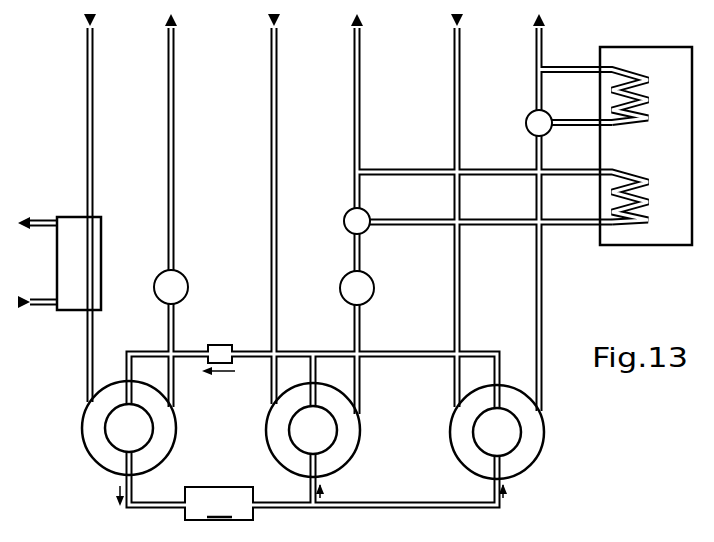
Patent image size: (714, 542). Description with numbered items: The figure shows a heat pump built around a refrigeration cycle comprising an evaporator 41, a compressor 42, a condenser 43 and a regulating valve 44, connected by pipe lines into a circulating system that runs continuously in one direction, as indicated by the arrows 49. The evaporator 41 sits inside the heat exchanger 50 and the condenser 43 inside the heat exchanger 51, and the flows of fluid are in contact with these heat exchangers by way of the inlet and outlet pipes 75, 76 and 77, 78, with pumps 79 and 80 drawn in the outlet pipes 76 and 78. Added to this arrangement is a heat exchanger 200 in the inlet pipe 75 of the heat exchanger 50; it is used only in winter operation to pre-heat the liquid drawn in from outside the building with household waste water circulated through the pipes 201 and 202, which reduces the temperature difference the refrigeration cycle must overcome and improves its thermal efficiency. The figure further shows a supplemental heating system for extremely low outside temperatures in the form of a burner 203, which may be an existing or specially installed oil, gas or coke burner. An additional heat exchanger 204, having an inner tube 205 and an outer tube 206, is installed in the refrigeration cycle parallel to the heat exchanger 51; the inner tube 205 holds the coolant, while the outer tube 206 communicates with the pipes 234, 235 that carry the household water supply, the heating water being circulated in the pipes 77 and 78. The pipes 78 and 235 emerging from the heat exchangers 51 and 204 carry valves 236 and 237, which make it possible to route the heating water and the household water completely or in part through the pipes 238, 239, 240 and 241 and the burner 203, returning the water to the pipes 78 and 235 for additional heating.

The inlet pipe 75 is at (87, 130).
The outlet pipe 76 is at (175, 155).
The inlet pipe 77 is at (271, 172).
The outlet pipe 78 is at (354, 134).
The pump 79 is at (188, 286).
The pump 80 is at (340, 290).
The evaporator 41 is at (106, 442).
The compressor 42 is at (313, 486).
The condenser 43 is at (337, 440).
The regulating valve 44 is at (218, 345).
The arrows 49 is at (118, 484).
The heat exchanger 50 is at (78, 428).
The heat exchanger 51 is at (363, 432).
The heat exchanger 200 is at (102, 240).
The pipe 201 is at (45, 305).
The pipe 202 is at (45, 222).
The burner 203 is at (653, 246).
The additional heat exchanger 204 is at (528, 480).
The inner tube 205 is at (520, 437).
The outer tube 206 is at (542, 430).
The pipe 234 is at (454, 133).
The pipe 235 is at (543, 287).
The valve 236 is at (343, 221).
The valve 237 is at (527, 117).
The pipe 238 is at (483, 226).
The pipe 239 is at (495, 169).
The pipe 240 is at (559, 125).
The pipe 241 is at (549, 67).